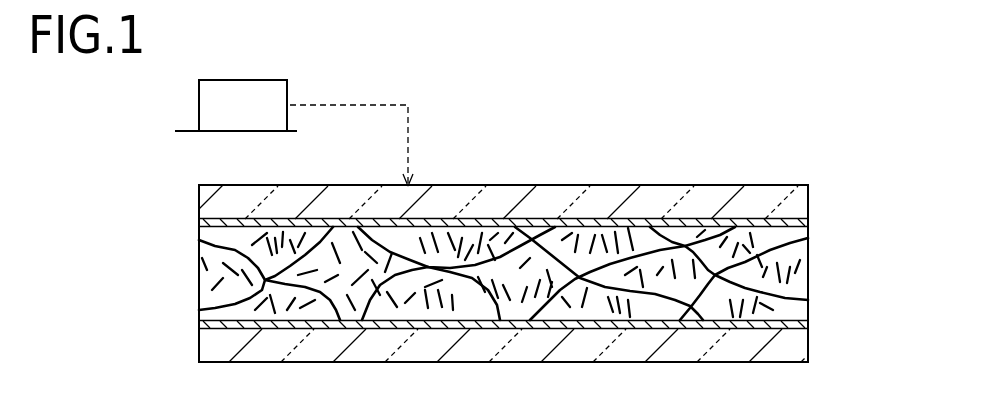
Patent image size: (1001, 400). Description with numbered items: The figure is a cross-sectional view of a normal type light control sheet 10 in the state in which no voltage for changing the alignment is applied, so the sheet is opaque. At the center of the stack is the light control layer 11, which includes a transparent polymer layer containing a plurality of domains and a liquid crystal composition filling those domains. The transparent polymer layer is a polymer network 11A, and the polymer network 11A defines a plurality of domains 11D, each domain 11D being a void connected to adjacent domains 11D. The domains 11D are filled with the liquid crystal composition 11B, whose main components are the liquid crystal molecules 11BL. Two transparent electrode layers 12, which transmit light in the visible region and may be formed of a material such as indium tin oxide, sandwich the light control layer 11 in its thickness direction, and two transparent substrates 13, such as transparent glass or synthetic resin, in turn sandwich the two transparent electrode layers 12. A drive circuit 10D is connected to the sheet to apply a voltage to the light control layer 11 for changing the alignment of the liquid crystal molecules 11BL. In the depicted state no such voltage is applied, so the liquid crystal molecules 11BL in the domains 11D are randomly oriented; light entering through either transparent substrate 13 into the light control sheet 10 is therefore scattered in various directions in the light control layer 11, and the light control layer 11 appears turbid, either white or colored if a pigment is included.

The normal type light control sheet 10 is at (886, 175).
The drive circuit 10D is at (199, 105).
The light control layer 11 is at (199, 289).
The polymer network 11A is at (318, 228).
The liquid crystal composition 11B is at (552, 312).
The liquid crystal molecules 11BL is at (657, 230).
The domains 11D is at (320, 308).
The transparent electrode layers 12 is at (808, 222).
The transparent substrates 13 is at (199, 197).